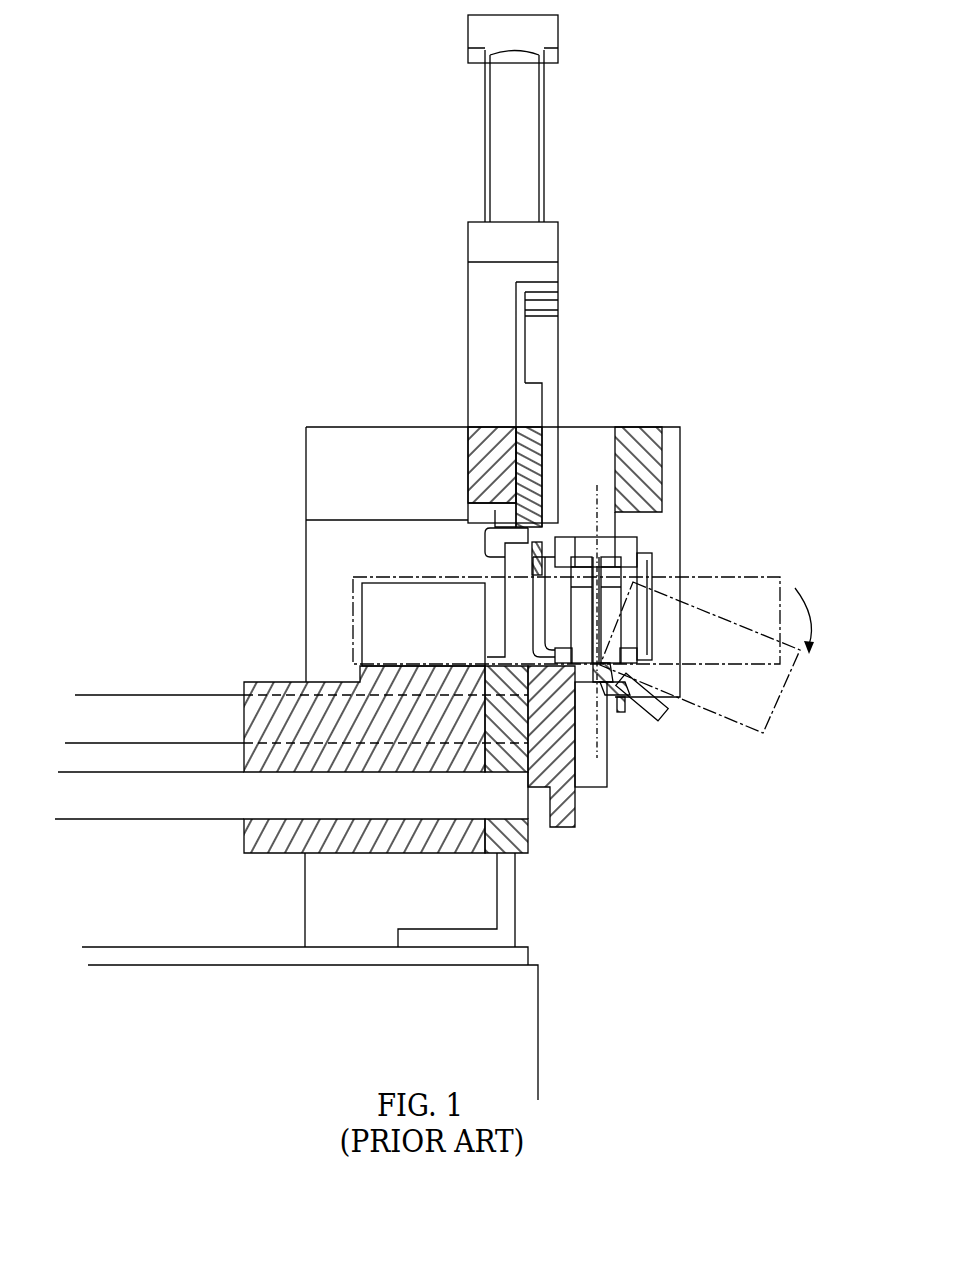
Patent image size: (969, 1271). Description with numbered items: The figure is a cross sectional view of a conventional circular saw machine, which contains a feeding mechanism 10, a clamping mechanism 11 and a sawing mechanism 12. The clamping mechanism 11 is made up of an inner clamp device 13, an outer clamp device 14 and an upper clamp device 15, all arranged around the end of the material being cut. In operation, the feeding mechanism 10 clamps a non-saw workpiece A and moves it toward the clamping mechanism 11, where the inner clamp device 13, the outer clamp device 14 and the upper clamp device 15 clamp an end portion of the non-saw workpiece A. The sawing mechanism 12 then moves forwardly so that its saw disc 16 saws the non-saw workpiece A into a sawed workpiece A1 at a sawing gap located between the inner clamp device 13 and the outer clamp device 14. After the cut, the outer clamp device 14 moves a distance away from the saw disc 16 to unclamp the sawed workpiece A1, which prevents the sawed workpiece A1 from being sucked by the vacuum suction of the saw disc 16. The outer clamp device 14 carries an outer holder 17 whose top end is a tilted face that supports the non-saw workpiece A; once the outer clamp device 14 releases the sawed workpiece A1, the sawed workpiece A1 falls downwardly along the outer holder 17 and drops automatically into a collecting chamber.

The feeding mechanism 10 is at (248, 680).
The clamping mechanism 11 is at (328, 377).
The sawing mechanism 12 is at (636, 776).
The inner clamp device 13 is at (563, 763).
The outer clamp device 14 is at (650, 476).
The upper clamp device 15 is at (475, 480).
The saw disc 16 is at (597, 485).
The outer holder 17 is at (615, 700).
The non-saw workpiece A is at (425, 578).
The sawed workpiece A1 is at (740, 588).